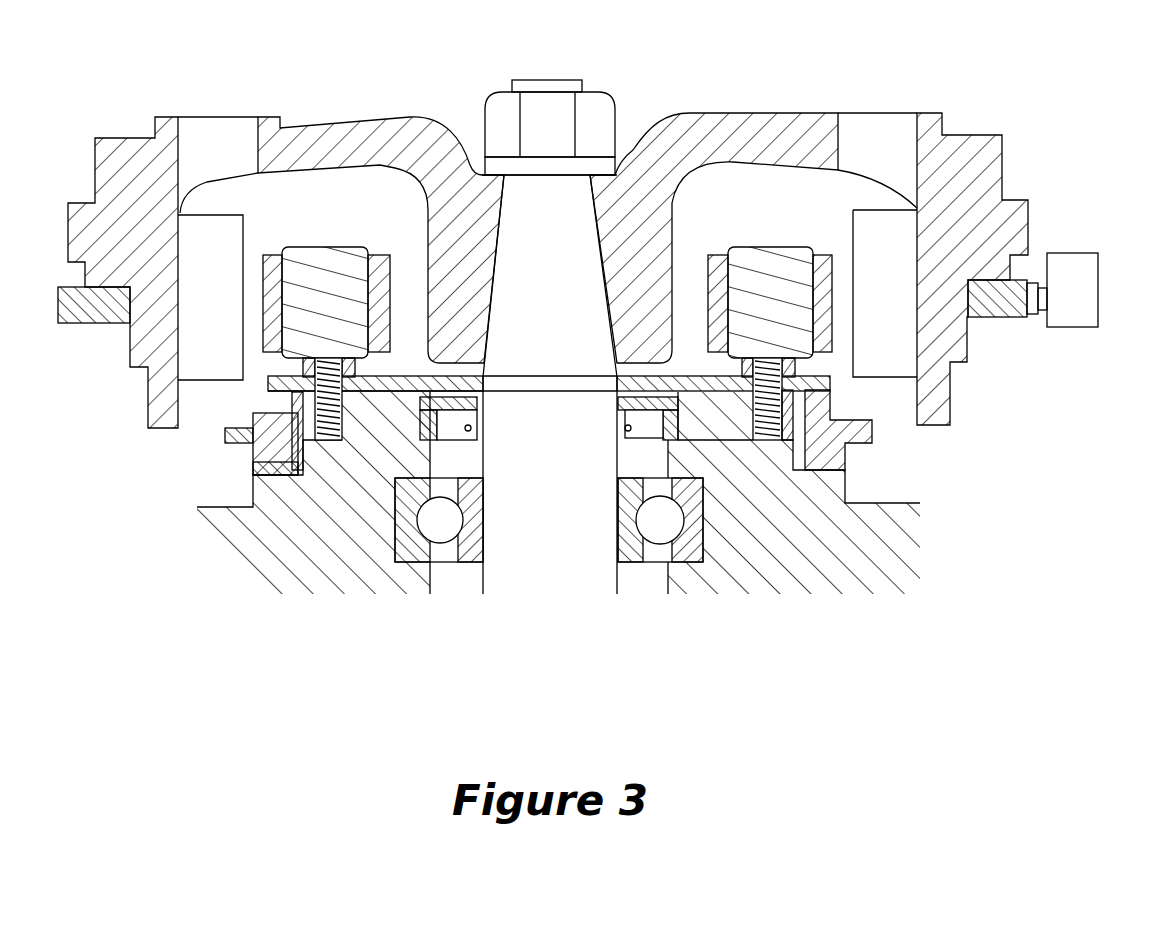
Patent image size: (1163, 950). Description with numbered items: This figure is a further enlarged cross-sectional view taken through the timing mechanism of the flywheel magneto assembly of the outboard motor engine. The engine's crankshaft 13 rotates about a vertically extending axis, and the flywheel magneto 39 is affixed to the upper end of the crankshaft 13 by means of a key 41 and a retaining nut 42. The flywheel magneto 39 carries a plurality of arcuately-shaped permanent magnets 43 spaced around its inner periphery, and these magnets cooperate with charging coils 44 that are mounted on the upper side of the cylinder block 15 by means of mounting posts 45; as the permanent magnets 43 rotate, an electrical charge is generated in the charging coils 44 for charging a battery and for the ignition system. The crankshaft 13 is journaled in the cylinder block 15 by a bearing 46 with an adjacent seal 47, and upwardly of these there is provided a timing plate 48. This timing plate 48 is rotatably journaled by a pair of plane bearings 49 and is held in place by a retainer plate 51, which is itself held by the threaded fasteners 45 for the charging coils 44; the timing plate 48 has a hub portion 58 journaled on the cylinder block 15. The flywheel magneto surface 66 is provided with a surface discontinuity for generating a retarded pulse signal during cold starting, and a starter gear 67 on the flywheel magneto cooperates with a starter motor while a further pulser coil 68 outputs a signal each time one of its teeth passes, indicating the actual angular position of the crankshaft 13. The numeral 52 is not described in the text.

The crankshaft 13 is at (578, 572).
The cylinder block 15 is at (877, 503).
The flywheel magneto 39 is at (724, 104).
The key 41 is at (583, 262).
The retaining nut 42 is at (592, 100).
The permanent magnets 43 is at (218, 223).
The charging coils 44 is at (345, 247).
The mounting posts 45 is at (338, 440).
The bearing 46 is at (407, 562).
The seal 47 is at (472, 426).
The timing plate 48 is at (253, 445).
The plane bearing 49 is at (273, 462).
The retainer plate 51 is at (265, 400).
The plate 52 is at (267, 376).
The hub portion 58 is at (225, 430).
The flywheel magneto surface 66 is at (1030, 218).
The starter gear 67 is at (1027, 317).
The pulser coil 68 is at (1087, 327).